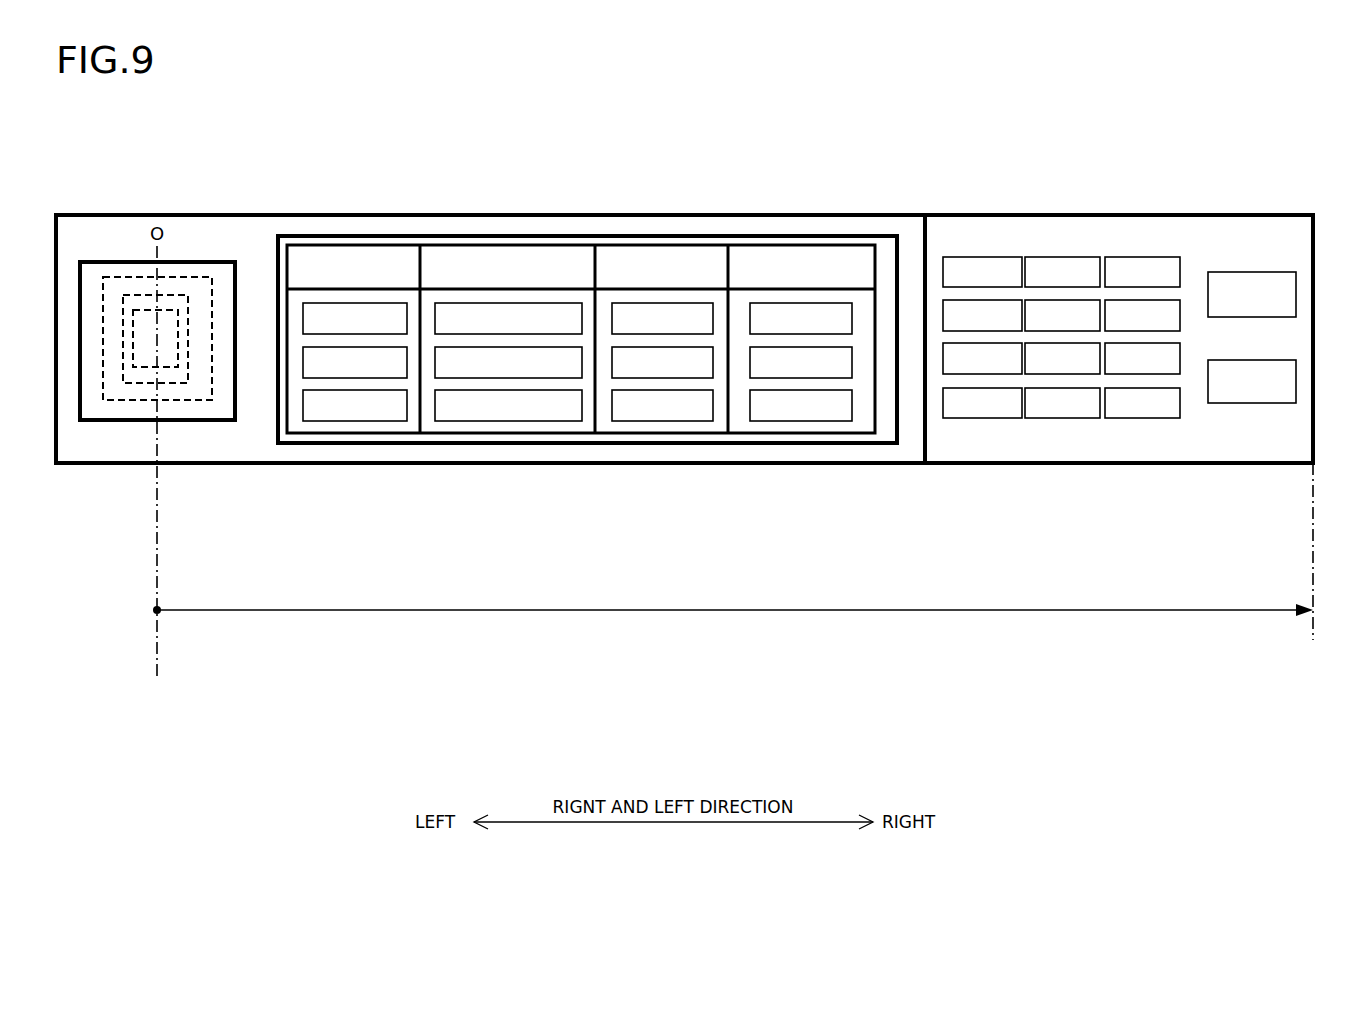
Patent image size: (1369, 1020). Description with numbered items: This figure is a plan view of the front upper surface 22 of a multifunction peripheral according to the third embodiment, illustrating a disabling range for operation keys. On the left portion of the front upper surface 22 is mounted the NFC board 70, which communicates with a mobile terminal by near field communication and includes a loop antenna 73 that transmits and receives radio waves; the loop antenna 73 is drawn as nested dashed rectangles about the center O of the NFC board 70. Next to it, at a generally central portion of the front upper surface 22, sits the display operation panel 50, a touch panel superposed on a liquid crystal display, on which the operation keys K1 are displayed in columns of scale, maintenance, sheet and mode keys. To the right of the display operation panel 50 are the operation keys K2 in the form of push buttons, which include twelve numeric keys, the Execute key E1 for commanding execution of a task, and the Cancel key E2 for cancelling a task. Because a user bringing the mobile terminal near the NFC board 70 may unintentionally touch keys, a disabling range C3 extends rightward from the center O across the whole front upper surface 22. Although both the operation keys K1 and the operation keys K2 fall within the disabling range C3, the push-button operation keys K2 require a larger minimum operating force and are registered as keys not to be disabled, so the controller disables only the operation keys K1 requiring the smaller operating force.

The front upper surface 22 is at (1260, 222).
The display operation panel 50 is at (587, 253).
The NFC board 70 is at (185, 280).
The loop antenna 73 is at (135, 398).
The operation keys K1 is at (393, 297).
The operation keys in the form of push buttons K2 is at (1218, 260).
The Execute key E1 is at (1290, 291).
The Cancel key E2 is at (1290, 378).
The disabling range C3 is at (733, 551).